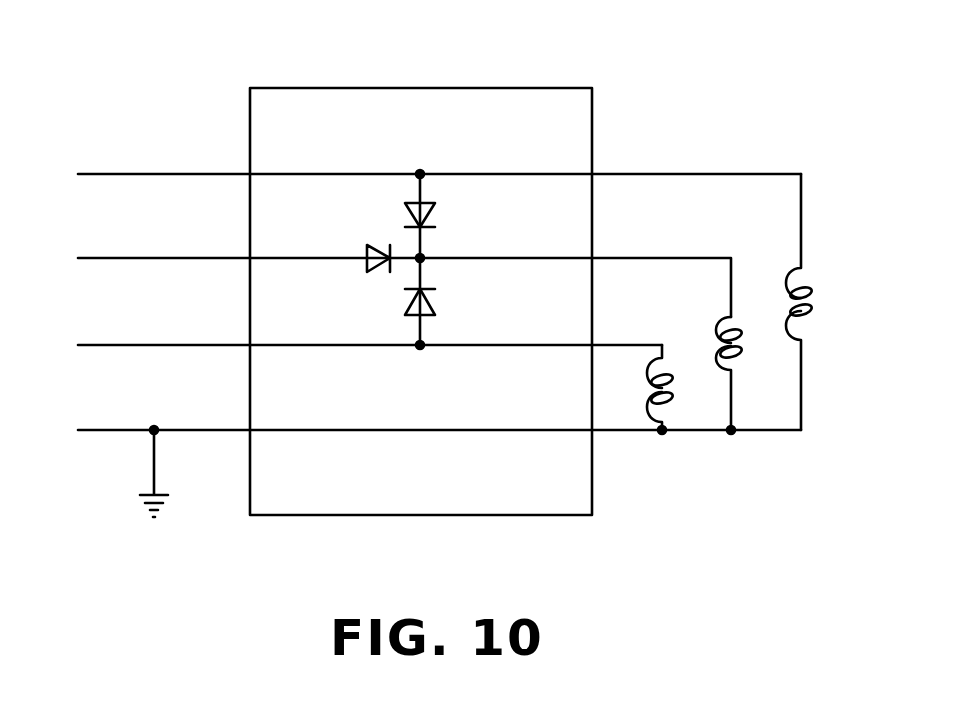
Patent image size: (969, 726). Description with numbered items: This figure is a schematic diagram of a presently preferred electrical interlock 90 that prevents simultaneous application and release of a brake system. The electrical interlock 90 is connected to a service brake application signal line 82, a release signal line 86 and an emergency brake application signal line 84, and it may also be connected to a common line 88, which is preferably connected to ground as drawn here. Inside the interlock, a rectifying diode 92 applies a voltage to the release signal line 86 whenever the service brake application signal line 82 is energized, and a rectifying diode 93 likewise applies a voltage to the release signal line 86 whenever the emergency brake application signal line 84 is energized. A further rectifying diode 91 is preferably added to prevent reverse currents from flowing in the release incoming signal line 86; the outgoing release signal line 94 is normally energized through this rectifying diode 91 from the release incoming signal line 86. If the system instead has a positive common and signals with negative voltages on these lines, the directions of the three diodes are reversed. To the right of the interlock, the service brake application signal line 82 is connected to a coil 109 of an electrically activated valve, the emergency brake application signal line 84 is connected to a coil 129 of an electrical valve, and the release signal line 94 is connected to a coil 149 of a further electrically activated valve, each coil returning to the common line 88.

The electrical interlock 90 is at (222, 92).
The service brake application signal line 82 is at (186, 173).
The release signal line 86 is at (186, 257).
The emergency brake application signal line 84 is at (194, 344).
The common line 88 is at (193, 429).
The rectifying diode 91 is at (368, 274).
The rectifying diode 92 is at (436, 215).
The rectifying diode 93 is at (436, 302).
The release signal line 94 is at (678, 257).
The coil 149 is at (719, 340).
The coil 129 is at (650, 388).
The coil 109 is at (812, 300).